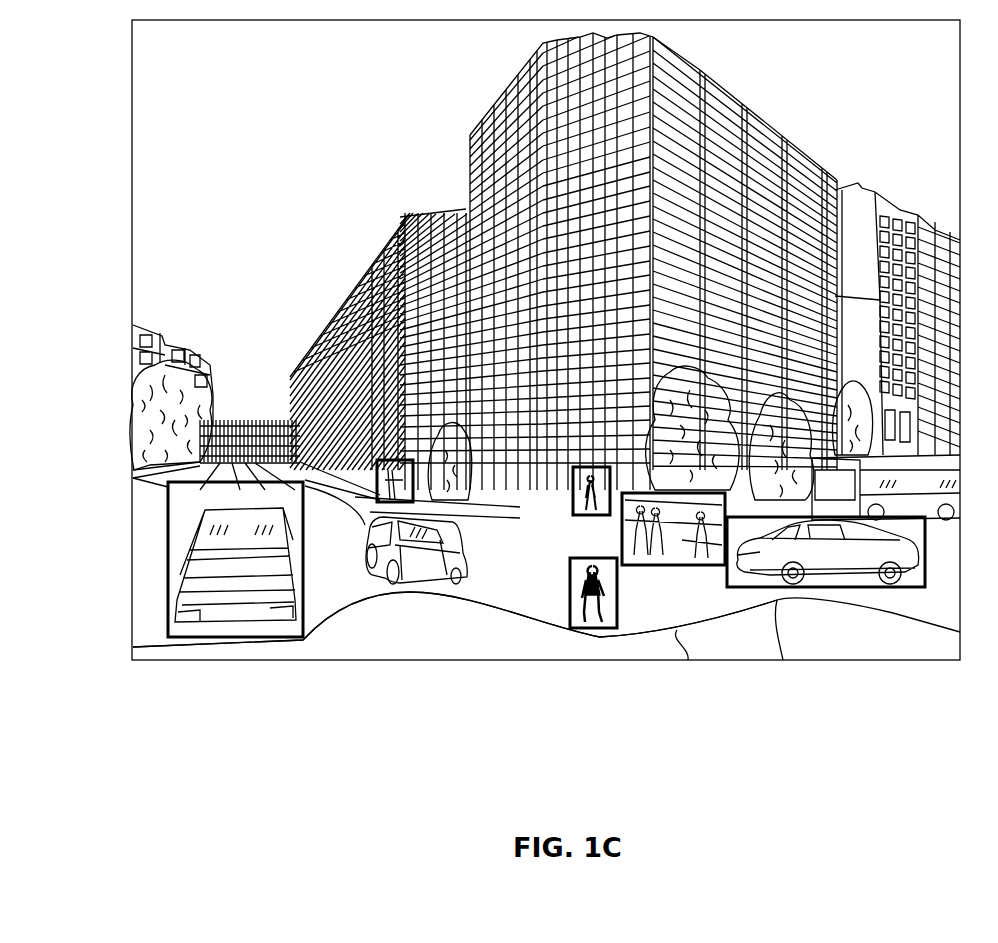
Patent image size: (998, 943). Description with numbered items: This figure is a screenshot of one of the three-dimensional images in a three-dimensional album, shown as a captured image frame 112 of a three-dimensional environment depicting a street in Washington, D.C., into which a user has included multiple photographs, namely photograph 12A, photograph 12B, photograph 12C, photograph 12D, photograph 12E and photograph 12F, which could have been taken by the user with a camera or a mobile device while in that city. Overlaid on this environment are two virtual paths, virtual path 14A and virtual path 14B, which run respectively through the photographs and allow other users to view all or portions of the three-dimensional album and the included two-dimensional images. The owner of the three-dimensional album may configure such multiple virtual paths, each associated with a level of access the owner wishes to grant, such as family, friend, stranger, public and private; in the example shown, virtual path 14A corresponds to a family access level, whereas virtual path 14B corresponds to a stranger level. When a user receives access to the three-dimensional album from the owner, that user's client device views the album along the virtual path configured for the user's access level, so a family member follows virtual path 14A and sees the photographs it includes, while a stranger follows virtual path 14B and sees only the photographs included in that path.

The captured image frame 112 is at (131, 248).
The photograph 12A is at (380, 503).
The photograph 12B is at (233, 612).
The photograph 12C is at (575, 628).
The photograph 12D is at (586, 516).
The photograph 12E is at (660, 566).
The photograph 12F is at (838, 590).
The virtual path 14A is at (447, 550).
The virtual path 14B is at (688, 661).